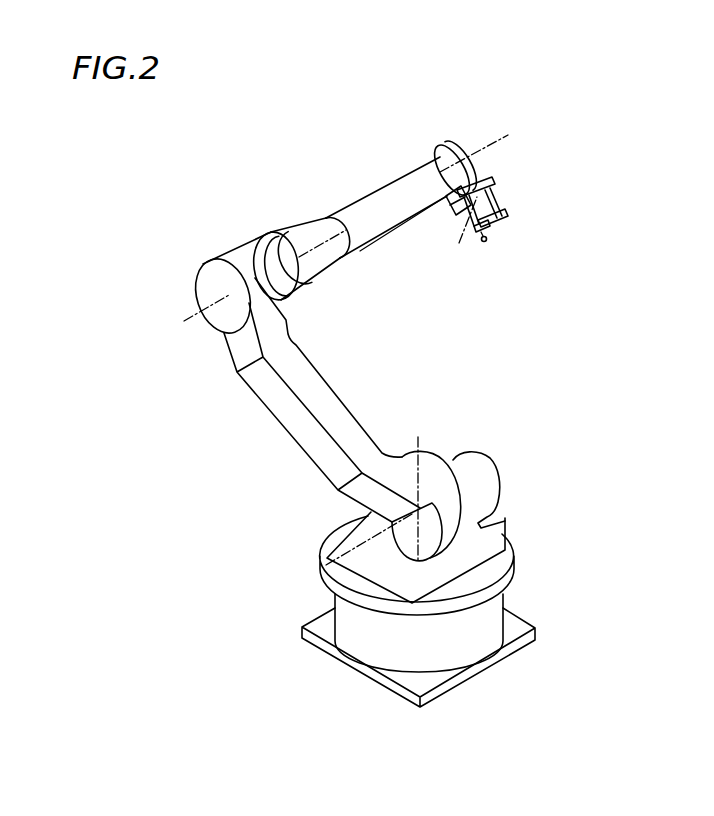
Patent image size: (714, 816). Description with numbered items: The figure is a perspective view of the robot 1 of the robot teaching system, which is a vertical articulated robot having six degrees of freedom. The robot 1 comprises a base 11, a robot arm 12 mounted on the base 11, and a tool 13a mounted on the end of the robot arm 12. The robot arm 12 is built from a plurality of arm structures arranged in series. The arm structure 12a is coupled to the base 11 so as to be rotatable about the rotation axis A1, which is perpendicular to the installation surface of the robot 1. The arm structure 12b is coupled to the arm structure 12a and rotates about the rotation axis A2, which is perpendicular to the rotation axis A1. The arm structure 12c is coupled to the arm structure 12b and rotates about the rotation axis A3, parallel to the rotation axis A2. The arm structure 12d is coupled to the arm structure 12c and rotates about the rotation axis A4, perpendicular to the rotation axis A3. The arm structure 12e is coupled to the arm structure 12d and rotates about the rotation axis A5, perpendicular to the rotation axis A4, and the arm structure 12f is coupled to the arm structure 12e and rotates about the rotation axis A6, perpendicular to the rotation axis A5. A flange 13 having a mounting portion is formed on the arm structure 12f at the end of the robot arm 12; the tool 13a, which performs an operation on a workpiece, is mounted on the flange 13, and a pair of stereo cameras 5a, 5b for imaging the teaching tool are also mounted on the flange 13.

The robot 1 is at (441, 95).
The base 11 is at (500, 621).
The robot arm 12 is at (195, 226).
The arm structure 12a is at (492, 541).
The arm structure 12b is at (293, 417).
The arm structure 12c is at (263, 242).
The arm structure 12d is at (361, 210).
The arm structure 12e is at (479, 148).
The arm structure 12f is at (441, 206).
The flange 13 is at (503, 188).
The tool 13a is at (487, 242).
The stereo camera 5a is at (492, 228).
The stereo camera 5b is at (508, 213).
The rotation axis A1 is at (424, 441).
The rotation axis A2 is at (322, 560).
The rotation axis A3 is at (185, 319).
The rotation axis A4 is at (327, 247).
The rotation axis A5 is at (494, 152).
The rotation axis A6 is at (462, 237).